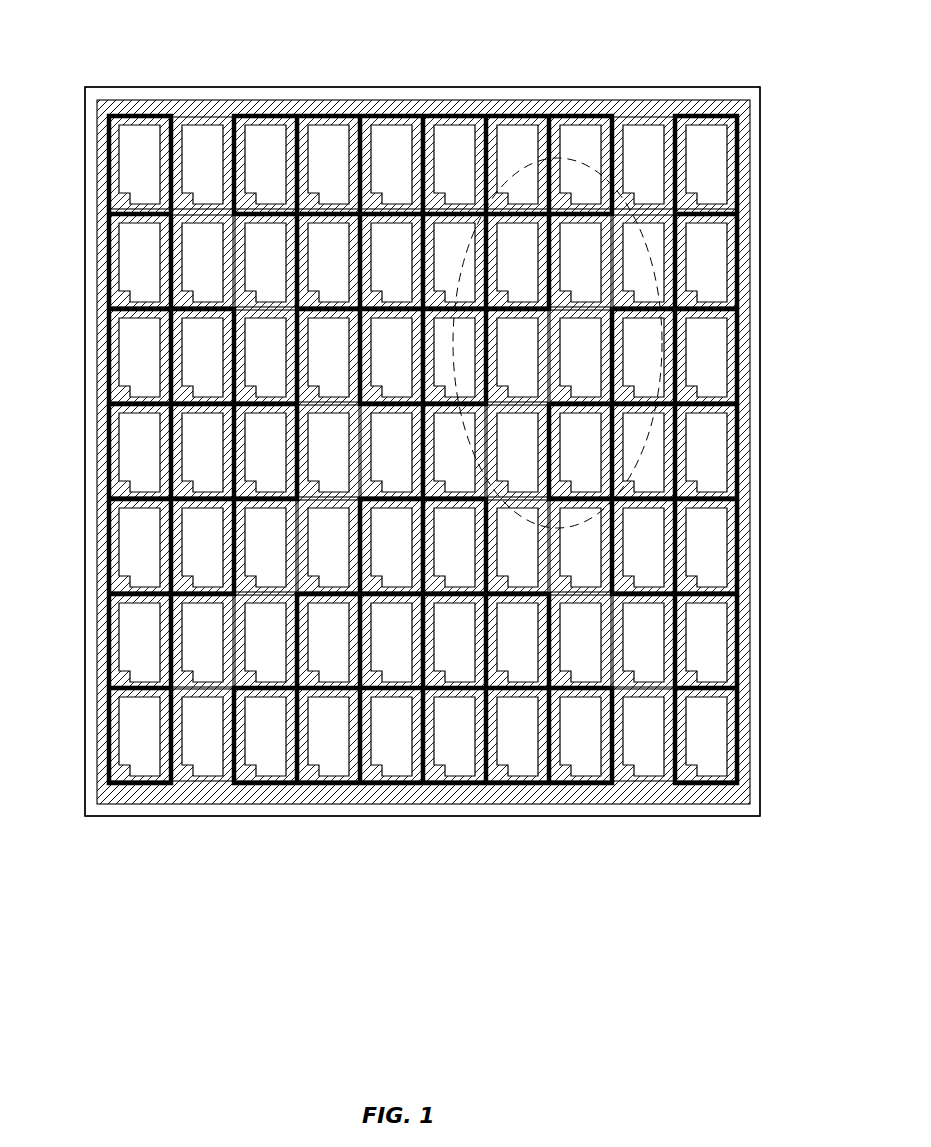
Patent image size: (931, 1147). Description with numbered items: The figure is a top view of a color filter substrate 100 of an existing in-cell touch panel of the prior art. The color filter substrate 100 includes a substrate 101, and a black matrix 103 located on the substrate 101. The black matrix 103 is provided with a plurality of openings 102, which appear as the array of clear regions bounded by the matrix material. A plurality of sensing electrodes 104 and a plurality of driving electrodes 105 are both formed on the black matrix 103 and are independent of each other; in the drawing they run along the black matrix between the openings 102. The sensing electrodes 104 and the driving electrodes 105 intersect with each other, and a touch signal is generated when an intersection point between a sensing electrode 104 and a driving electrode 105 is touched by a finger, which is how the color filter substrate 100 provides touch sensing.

The color filter substrate 100 is at (112, 25).
The substrate 101 is at (757, 103).
The openings 102 is at (718, 251).
The black matrix 103 is at (748, 173).
The sensing electrodes 104 is at (740, 410).
The driving electrodes 105 is at (455, 112).